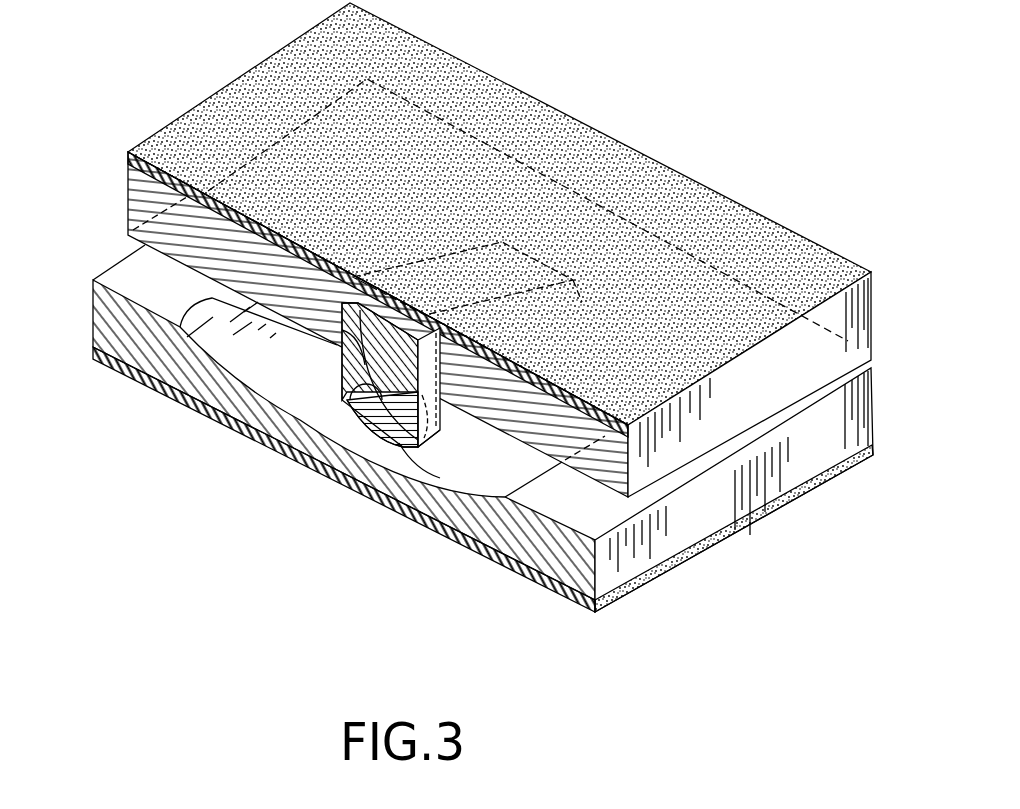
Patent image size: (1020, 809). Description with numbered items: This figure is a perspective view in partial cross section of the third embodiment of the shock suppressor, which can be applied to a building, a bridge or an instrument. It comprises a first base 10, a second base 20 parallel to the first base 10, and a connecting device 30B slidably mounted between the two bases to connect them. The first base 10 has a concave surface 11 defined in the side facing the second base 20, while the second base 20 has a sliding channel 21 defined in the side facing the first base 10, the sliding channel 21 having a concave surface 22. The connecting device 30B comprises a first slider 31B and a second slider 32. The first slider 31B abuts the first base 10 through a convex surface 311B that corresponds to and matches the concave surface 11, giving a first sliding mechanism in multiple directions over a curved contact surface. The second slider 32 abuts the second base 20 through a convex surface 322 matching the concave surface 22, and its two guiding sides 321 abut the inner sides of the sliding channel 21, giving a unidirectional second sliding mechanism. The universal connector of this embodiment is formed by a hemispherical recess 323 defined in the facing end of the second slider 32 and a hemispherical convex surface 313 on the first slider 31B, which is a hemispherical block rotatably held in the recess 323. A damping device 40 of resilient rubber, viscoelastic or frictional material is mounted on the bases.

The first base 10 is at (93, 318).
The concave surface 11 is at (207, 325).
The second base 20 is at (127, 202).
The sliding channel 21 is at (358, 300).
The concave surface 22 is at (474, 248).
The second slider 32 is at (432, 333).
The damping device 40 is at (184, 114).
The convex surface 313 is at (365, 363).
The guiding sides 321 is at (437, 424).
The convex surface 322 is at (411, 301).
The recess 323 is at (350, 396).
The connecting device 30B is at (379, 437).
The first slider 31B is at (373, 413).
The convex surface 311B is at (399, 443).